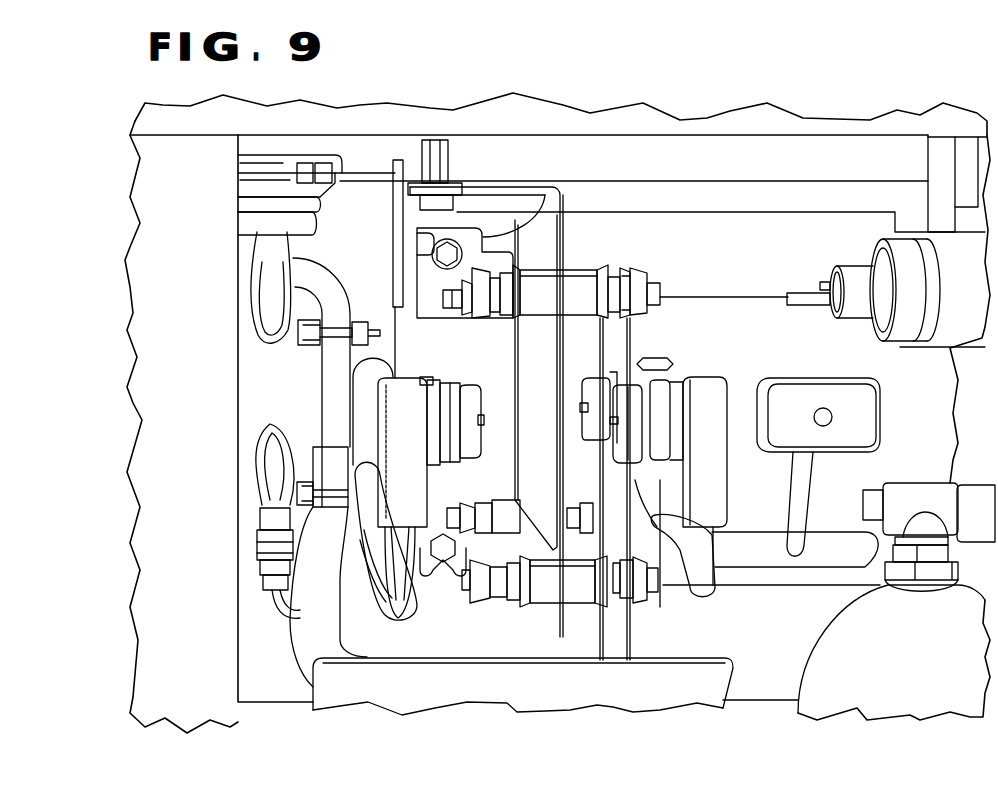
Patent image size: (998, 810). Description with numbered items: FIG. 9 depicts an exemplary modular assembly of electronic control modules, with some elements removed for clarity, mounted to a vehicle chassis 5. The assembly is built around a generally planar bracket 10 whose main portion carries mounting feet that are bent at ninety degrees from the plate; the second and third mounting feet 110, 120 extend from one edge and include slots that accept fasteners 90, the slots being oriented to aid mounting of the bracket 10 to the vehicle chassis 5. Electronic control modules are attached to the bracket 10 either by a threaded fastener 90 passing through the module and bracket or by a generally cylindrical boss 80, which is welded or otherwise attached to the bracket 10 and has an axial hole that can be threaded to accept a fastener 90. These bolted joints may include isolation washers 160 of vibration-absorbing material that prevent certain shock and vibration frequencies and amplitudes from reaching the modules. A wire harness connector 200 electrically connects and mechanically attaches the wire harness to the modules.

The vehicle chassis 5 is at (150, 260).
The bracket 10 is at (512, 358).
The boss 80 is at (582, 277).
The fastener 90 is at (440, 252).
The second mounting foot 110 is at (480, 243).
The third mounting foot 120 is at (420, 547).
The isolation washer 160 is at (627, 280).
The wire harness connector 200 is at (705, 385).